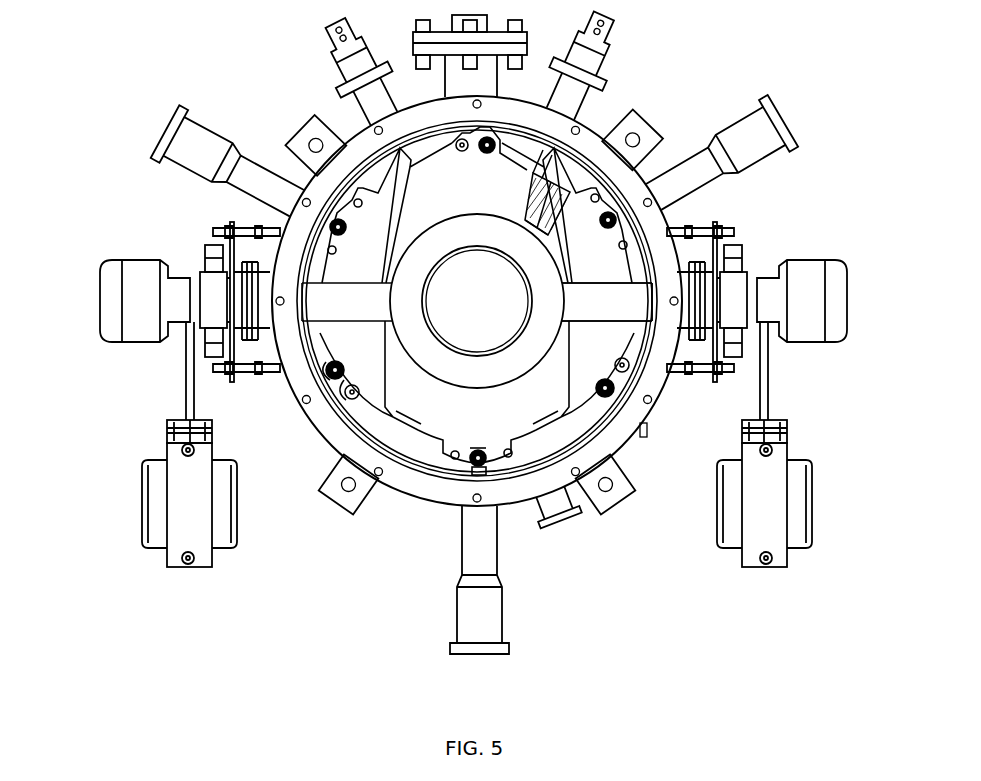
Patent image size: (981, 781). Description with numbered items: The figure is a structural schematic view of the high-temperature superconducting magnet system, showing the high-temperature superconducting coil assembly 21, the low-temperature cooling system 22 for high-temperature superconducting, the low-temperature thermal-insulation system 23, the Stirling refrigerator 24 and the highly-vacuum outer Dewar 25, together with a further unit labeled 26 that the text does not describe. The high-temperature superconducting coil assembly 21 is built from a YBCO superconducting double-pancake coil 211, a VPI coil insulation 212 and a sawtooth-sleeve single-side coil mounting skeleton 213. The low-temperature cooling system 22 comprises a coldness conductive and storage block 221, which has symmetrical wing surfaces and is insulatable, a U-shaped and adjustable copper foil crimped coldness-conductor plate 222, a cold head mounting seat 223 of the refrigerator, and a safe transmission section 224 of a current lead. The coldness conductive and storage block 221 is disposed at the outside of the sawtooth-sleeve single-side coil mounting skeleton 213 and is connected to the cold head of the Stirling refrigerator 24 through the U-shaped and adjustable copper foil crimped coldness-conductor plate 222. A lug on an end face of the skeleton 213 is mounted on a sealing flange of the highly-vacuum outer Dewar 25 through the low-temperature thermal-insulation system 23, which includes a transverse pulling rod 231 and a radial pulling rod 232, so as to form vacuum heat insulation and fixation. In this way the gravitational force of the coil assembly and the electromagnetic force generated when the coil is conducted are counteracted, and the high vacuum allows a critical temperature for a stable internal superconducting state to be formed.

The high-temperature superconducting coil assembly 21 is at (370, 198).
The low-temperature cooling system for high-temperature superconducting 22 is at (347, 303).
The low-temperature thermal-insulation system 23 is at (298, 352).
The Stirling refrigerator 24 is at (185, 420).
The highly-vacuum outer Dewar 25 is at (568, 244).
The drive unit 26 is at (625, 440).
The YBCO superconducting double-pancake coil 211 is at (553, 190).
The VPI coil insulation 212 is at (592, 197).
The sawtooth-sleeve single-side coil mounting skeleton 213 is at (575, 190).
The coldness conductive and storage block 221 is at (560, 275).
The U-shaped and adjustable copper foil crimped coldness-conductor plate 222 is at (605, 312).
The cold head mounting seat of the refrigerator 223 is at (688, 336).
The safe transmission section of a current lead 224 is at (400, 180).
The transverse pulling rod 231 is at (335, 382).
The radial pulling rod 232 is at (480, 460).